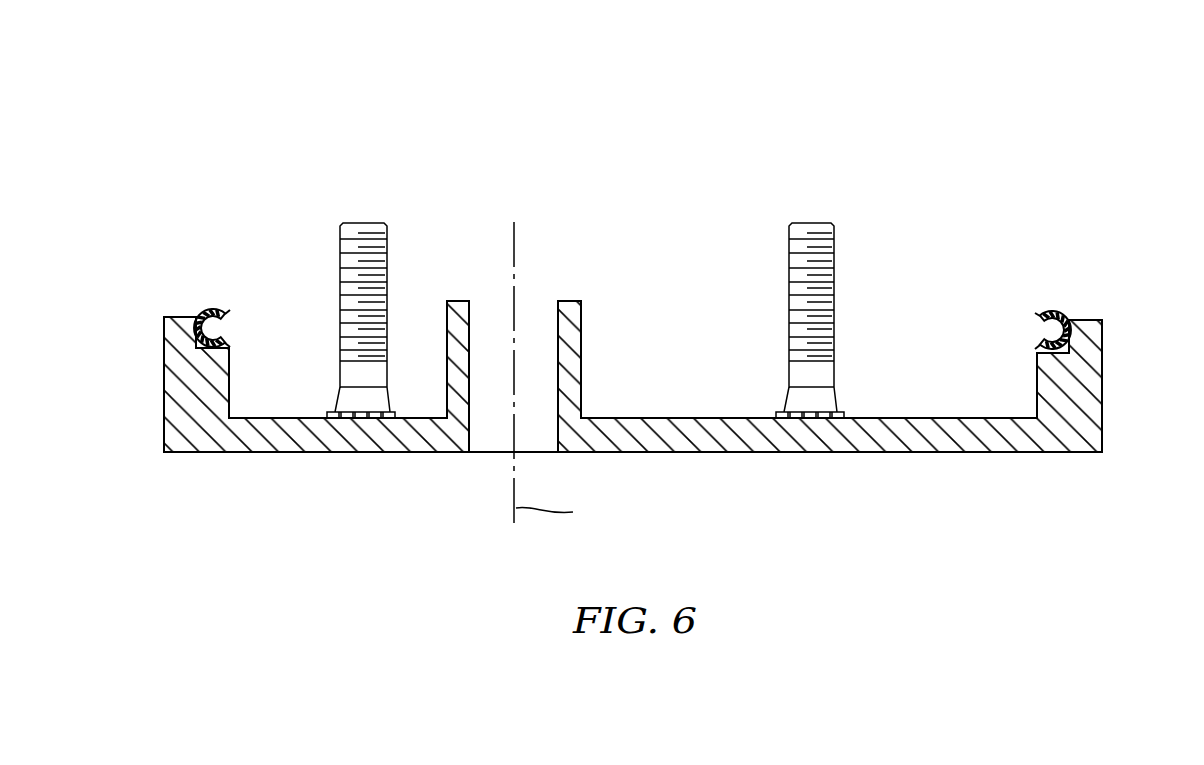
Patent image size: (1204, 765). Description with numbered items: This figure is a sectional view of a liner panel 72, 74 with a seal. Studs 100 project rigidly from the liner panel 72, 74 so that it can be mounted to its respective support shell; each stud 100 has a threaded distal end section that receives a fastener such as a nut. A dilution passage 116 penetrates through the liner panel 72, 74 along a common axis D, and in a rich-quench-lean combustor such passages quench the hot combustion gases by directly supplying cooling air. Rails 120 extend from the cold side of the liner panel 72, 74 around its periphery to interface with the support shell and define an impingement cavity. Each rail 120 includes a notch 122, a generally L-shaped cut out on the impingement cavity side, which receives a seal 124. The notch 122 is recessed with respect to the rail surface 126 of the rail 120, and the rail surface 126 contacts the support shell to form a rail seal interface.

The liner panel 72 is at (667, 295).
The liner panel 74 is at (667, 295).
The stud 100 is at (812, 222).
The dilution passage 116 is at (491, 470).
The rail 120 is at (1106, 372).
The notch 122 is at (1040, 372).
The seal 124 is at (1042, 313).
The rail surface 126 is at (178, 317).